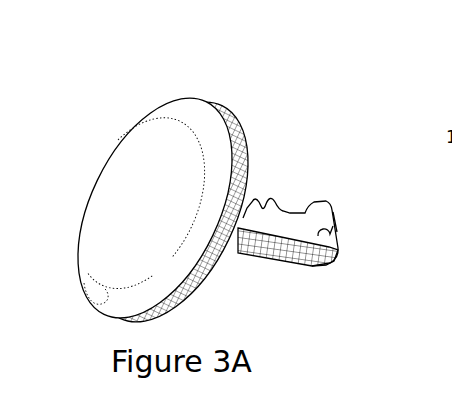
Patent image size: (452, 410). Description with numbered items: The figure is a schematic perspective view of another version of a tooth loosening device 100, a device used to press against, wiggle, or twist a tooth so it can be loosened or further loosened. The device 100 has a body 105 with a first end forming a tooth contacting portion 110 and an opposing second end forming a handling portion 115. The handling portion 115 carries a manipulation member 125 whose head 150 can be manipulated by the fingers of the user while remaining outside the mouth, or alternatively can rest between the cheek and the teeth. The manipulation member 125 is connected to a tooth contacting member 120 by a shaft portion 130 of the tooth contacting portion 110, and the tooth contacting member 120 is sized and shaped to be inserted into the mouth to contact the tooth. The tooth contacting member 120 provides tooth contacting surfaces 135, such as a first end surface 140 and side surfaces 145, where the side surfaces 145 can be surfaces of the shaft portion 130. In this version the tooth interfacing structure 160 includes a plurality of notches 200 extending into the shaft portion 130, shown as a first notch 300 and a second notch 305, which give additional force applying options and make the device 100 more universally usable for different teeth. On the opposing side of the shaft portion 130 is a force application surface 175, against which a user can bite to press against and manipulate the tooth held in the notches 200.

The tooth loosening device 100 is at (291, 53).
The body 105 is at (311, 82).
The tooth contacting portion 110 is at (341, 120).
The handling portion 115 is at (127, 83).
The tooth contacting member 120 is at (283, 123).
The manipulation member 125 is at (102, 168).
The shaft portion 130 is at (306, 282).
The tooth contacting surfaces 135 is at (347, 208).
The first end surface 140 is at (336, 222).
The side surfaces 145 is at (327, 241).
The head 150 is at (83, 288).
The tooth interfacing structure 160 is at (288, 180).
The force application surface 175 is at (271, 259).
The notch 200 is at (303, 162).
The first notch 300 is at (292, 200).
The second notch 305 is at (236, 257).